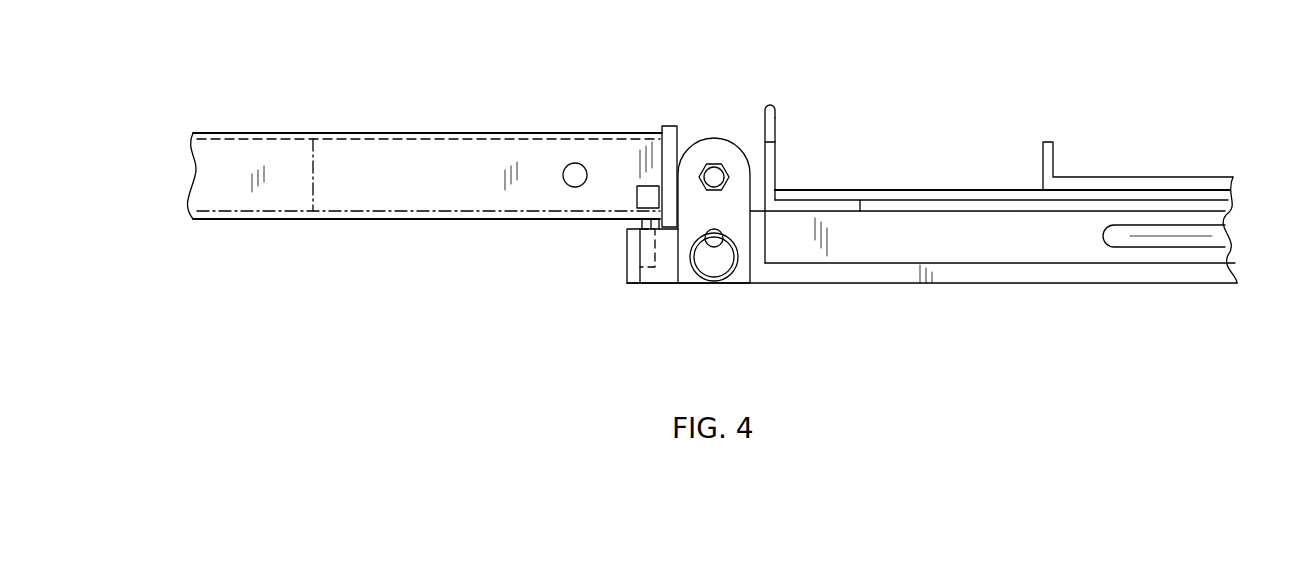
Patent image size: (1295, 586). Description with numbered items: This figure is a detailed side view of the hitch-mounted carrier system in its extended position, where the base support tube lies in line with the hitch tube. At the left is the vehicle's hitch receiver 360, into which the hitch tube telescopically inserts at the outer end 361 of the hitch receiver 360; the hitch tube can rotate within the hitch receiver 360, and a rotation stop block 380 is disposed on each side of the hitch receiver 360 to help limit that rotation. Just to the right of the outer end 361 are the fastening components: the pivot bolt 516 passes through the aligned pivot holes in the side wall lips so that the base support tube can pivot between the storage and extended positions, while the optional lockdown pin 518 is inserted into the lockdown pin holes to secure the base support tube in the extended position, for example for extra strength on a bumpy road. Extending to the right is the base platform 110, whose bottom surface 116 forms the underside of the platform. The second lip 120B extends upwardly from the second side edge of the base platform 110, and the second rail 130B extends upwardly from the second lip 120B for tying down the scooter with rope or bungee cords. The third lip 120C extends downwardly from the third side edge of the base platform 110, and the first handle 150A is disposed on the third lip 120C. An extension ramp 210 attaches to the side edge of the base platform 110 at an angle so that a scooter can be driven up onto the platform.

The hitch receiver 360 is at (428, 133).
The outer end 361 is at (641, 132).
The rotation stop block 380 is at (637, 198).
The pivot bolt 516 is at (714, 165).
The lockdown pin 518 is at (714, 283).
The second rail 130B is at (770, 105).
The second lip 120B is at (783, 160).
The base platform 110 is at (876, 190).
The extension ramp 210 is at (1104, 182).
The third lip 120C is at (1067, 245).
The first handle 150A is at (1165, 240).
The bottom surface 116 is at (975, 283).